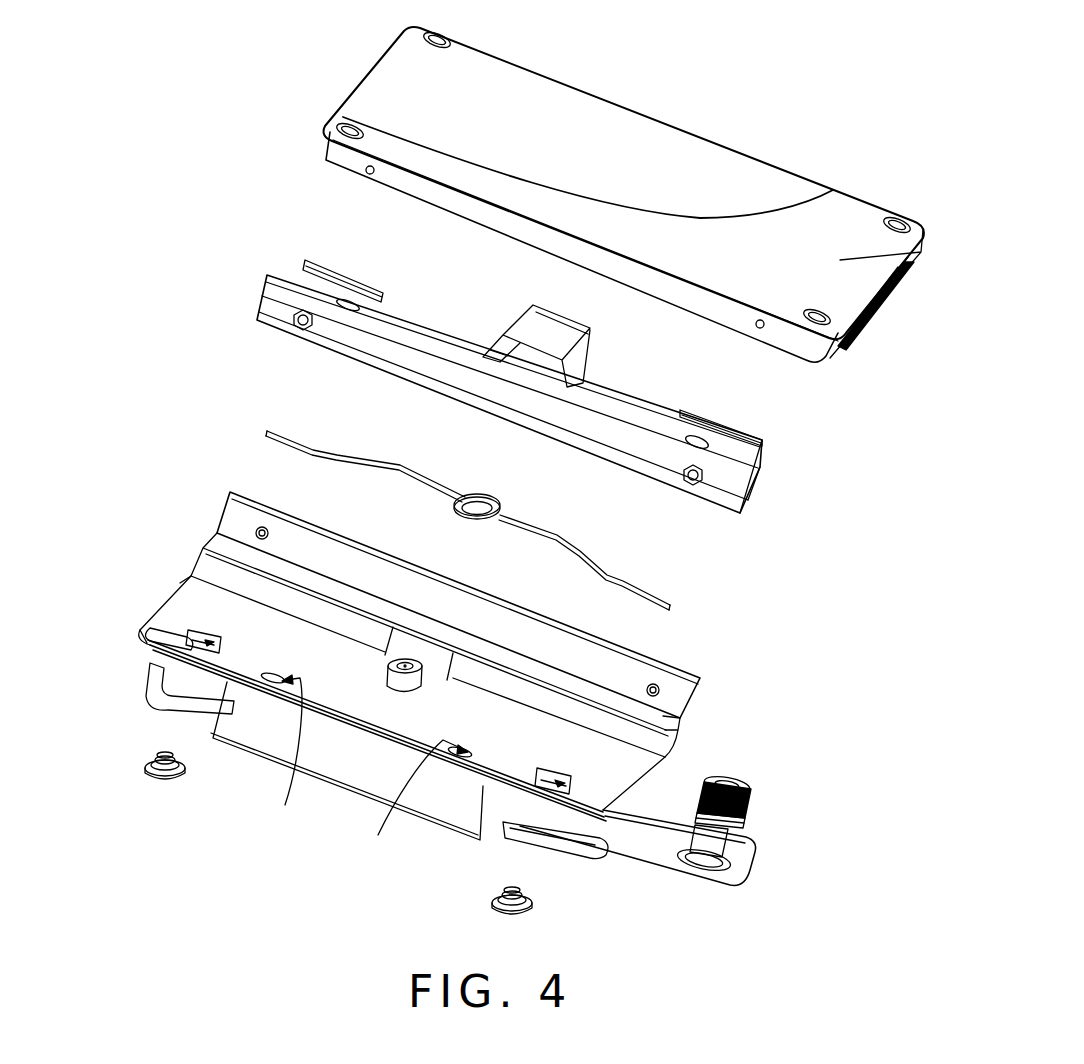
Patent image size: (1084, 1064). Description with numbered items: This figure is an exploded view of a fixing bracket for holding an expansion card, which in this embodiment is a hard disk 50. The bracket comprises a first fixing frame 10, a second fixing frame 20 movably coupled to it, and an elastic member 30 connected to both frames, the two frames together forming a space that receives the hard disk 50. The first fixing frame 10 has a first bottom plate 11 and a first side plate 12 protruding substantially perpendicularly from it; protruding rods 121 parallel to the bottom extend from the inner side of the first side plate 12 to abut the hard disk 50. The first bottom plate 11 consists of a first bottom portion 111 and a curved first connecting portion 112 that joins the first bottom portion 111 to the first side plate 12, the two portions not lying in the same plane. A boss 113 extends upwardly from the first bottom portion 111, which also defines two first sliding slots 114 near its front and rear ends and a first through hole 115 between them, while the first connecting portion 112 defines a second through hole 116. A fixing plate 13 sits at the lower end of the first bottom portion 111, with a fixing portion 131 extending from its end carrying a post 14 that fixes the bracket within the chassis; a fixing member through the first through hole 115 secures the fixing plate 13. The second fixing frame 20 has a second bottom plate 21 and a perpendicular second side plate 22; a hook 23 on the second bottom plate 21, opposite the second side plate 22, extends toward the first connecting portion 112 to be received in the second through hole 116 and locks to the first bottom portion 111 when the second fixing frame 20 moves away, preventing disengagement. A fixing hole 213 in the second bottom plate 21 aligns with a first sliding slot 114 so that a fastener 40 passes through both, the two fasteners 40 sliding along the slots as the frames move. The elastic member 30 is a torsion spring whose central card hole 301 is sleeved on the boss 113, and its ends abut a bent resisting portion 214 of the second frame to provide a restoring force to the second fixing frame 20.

The first fixing frame 10 is at (177, 545).
The first bottom plate 11 is at (480, 698).
The first bottom portion 111 is at (603, 767).
The first connecting portion 112 is at (663, 716).
The boss 113 is at (412, 667).
The first sliding slot 114 is at (150, 640).
The first through hole 115 is at (347, 770).
The second through hole 116 is at (412, 663).
The first side plate 12 is at (479, 604).
The protruding rod 121 is at (263, 528).
The fixing plate 13 is at (650, 795).
The fixing portion 131 is at (640, 835).
The post 14 is at (704, 842).
The second fixing frame 20 is at (272, 222).
The second bottom plate 21 is at (768, 466).
The second side plate 22 is at (720, 487).
The hook 23 is at (557, 337).
The fixing hole 213 is at (697, 442).
The resisting portion 214 is at (343, 277).
The elastic member 30 is at (468, 520).
The card hole 301 is at (477, 507).
The fastener 40 is at (173, 753).
The hard disk 50 is at (668, 153).